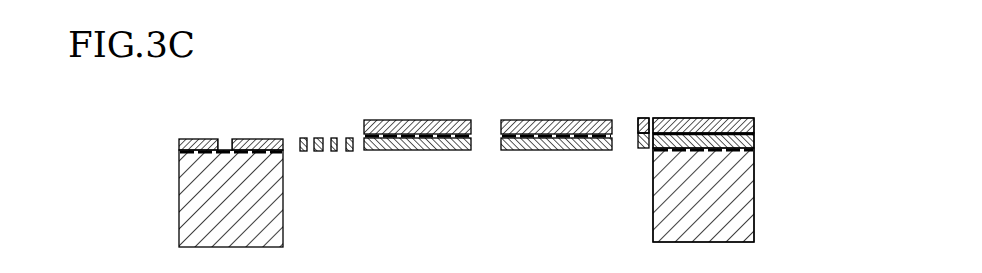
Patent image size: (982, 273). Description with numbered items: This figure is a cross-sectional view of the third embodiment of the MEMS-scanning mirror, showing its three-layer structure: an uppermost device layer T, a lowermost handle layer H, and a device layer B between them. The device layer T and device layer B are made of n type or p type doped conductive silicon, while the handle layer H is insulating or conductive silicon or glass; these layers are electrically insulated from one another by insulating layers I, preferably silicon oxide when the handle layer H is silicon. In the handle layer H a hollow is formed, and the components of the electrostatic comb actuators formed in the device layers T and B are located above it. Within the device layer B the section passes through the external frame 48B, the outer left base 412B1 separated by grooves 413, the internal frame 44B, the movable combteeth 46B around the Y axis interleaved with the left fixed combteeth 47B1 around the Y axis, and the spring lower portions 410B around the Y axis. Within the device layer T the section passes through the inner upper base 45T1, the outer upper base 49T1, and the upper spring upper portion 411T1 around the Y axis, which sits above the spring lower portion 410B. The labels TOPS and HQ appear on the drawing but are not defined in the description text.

The grooves 413 is at (224, 143).
The external frame 48B is at (183, 139).
The outer left base 412B1 is at (255, 139).
The movable combteeth around the Y axis 46B is at (350, 138).
The left fixed combteeth around the Y axis 47B1 is at (334, 151).
The top substrate TOPS is at (402, 120).
The inner upper base 45T1 is at (532, 120).
The internal frame 44B is at (535, 150).
The headquarters region HQ is at (556, 232).
The upper spring upper portion around the Y axis 411T1 is at (643, 117).
The spring lower portions around the Y axis 410B is at (637, 138).
The outer upper base 49T1 is at (700, 120).
The device layer T is at (727, 117).
The device layer B is at (755, 135).
The insulating layers I is at (253, 157).
The handle layer H is at (227, 230).